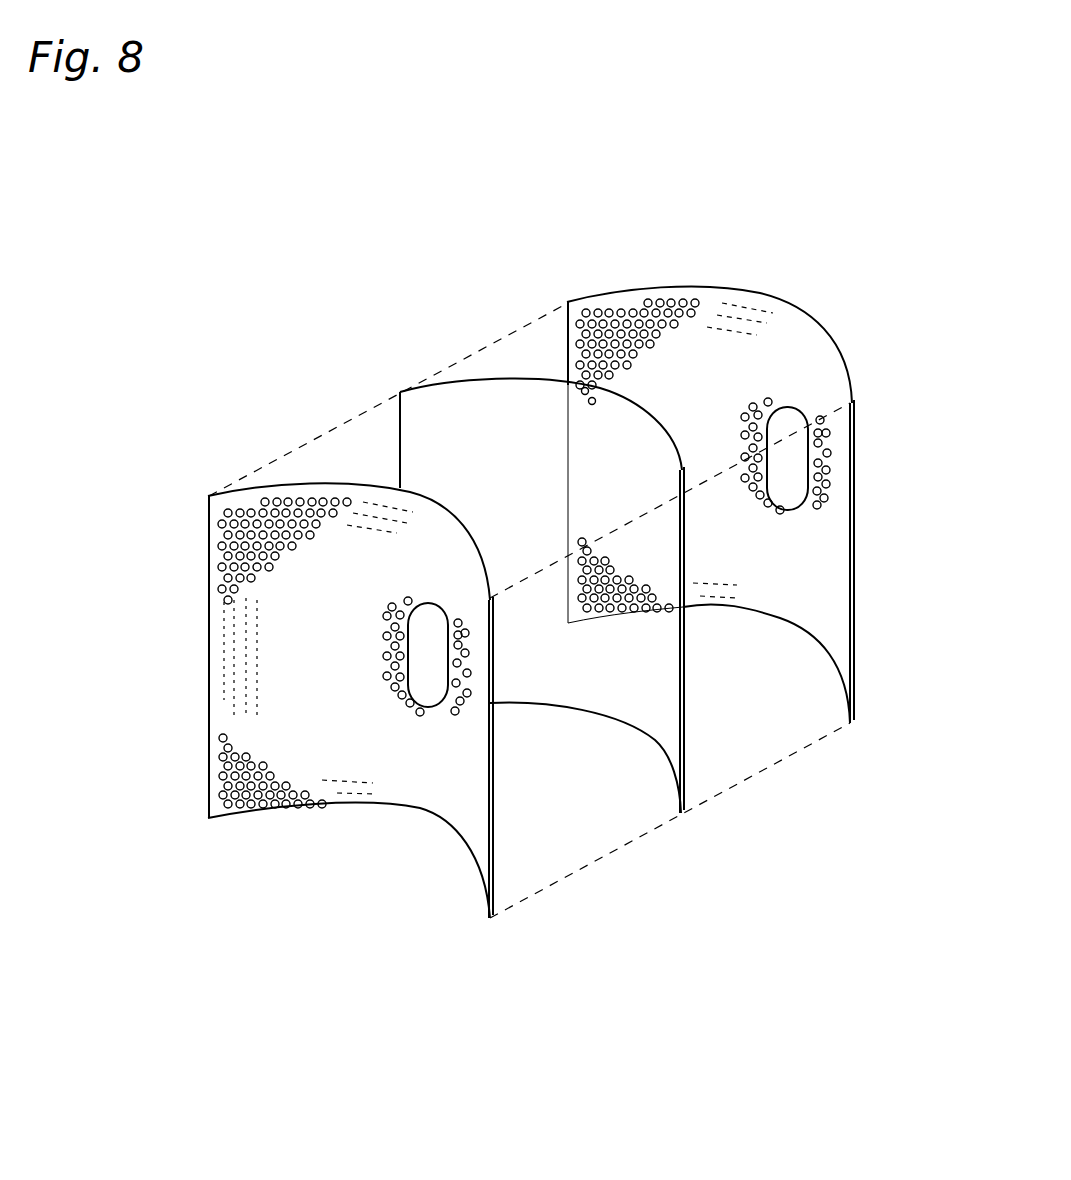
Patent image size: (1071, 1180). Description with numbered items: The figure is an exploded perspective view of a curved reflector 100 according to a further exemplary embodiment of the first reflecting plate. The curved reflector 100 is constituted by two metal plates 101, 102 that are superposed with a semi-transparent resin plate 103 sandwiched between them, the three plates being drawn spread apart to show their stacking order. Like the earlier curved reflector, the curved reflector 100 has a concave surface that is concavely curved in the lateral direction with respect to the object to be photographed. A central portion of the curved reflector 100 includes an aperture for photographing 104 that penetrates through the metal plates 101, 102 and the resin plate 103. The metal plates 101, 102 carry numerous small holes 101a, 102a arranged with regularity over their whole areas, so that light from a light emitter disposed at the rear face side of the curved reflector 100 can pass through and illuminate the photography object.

The curved reflector 100 is at (932, 800).
The metal plate 101 is at (490, 916).
The small holes 101a is at (228, 528).
The metal plate 102 is at (852, 720).
The small holes 102a is at (568, 304).
The semi-transparent resin plate 103 is at (682, 808).
The aperture for photographing 104 is at (410, 703).